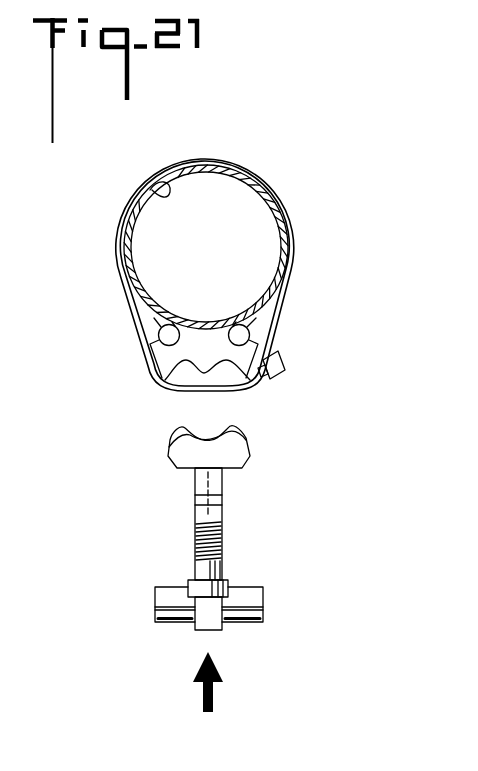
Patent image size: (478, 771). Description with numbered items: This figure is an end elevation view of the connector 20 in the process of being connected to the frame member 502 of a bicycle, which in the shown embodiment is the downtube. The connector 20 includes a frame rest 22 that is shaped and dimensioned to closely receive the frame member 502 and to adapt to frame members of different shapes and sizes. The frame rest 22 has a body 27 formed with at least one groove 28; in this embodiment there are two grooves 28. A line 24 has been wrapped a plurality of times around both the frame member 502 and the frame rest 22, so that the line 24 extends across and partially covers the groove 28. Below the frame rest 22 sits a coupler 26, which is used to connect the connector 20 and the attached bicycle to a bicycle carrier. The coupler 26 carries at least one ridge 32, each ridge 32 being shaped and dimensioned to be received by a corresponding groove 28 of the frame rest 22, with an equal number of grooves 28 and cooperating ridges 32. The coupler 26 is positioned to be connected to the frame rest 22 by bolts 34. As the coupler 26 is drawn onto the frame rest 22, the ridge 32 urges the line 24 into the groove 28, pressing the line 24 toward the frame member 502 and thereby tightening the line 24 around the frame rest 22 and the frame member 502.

The connector 20 is at (274, 164).
The frame rest 22 is at (127, 351).
The line 24 is at (125, 224).
The coupler 26 is at (262, 491).
The body 27 is at (243, 354).
The groove 28 is at (226, 368).
The ridge 32 is at (170, 446).
The bolt 34 is at (205, 570).
The frame member 502 is at (165, 192).